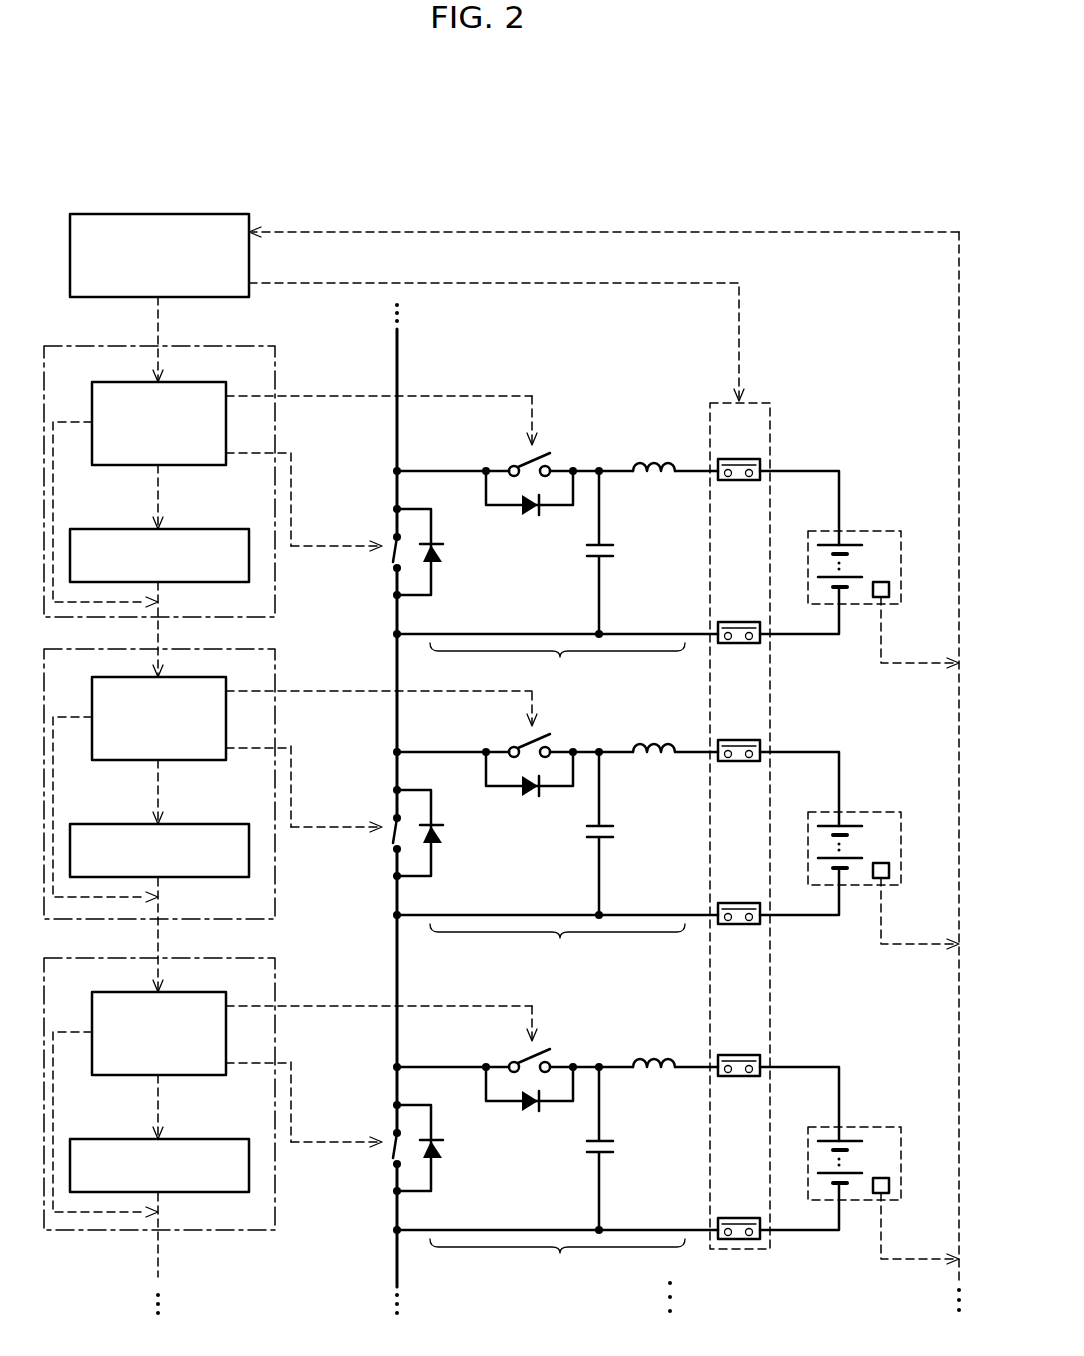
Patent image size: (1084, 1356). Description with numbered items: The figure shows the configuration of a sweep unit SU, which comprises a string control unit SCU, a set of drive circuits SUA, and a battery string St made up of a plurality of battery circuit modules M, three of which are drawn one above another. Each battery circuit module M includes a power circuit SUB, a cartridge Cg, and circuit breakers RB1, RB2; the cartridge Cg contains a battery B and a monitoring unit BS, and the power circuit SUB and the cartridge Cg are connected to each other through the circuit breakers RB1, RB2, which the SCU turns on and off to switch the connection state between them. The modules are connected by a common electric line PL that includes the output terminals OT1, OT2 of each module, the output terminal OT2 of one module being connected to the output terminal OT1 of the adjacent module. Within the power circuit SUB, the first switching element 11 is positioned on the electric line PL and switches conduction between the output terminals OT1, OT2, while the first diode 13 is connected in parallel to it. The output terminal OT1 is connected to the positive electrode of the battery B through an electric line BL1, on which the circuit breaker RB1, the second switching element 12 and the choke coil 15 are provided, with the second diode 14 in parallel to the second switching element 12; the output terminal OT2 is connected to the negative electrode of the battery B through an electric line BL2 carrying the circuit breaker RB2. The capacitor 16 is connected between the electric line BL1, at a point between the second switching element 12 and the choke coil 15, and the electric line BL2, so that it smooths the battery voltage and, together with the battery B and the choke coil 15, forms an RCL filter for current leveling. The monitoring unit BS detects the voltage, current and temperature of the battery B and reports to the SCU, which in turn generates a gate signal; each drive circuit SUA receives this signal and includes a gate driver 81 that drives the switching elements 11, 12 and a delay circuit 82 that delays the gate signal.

The first switching element 11 is at (393, 553).
The second switching element 12 is at (527, 457).
The first diode 13 is at (435, 540).
The second diode 14 is at (540, 508).
The choke coil 15 is at (656, 458).
The capacitor 16 is at (593, 558).
The gate driver 81 is at (190, 466).
The delay circuit 82 is at (90, 528).
The string control unit SCU is at (159, 255).
The drive circuit SUA is at (275, 379).
The power circuit SUB is at (557, 964).
The sweep unit SU is at (637, 142).
The battery string St is at (818, 343).
The electric line PL is at (397, 330).
The output terminal OT1 is at (397, 470).
The output terminal OT2 is at (397, 634).
The electric line BL1 is at (613, 468).
The electric line BL2 is at (482, 633).
The circuit breaker RB1 is at (737, 458).
The circuit breaker RB2 is at (737, 620).
The battery circuit module M is at (783, 462).
The battery B is at (833, 543).
The cartridge Cg is at (867, 530).
The monitoring unit BS is at (872, 594).